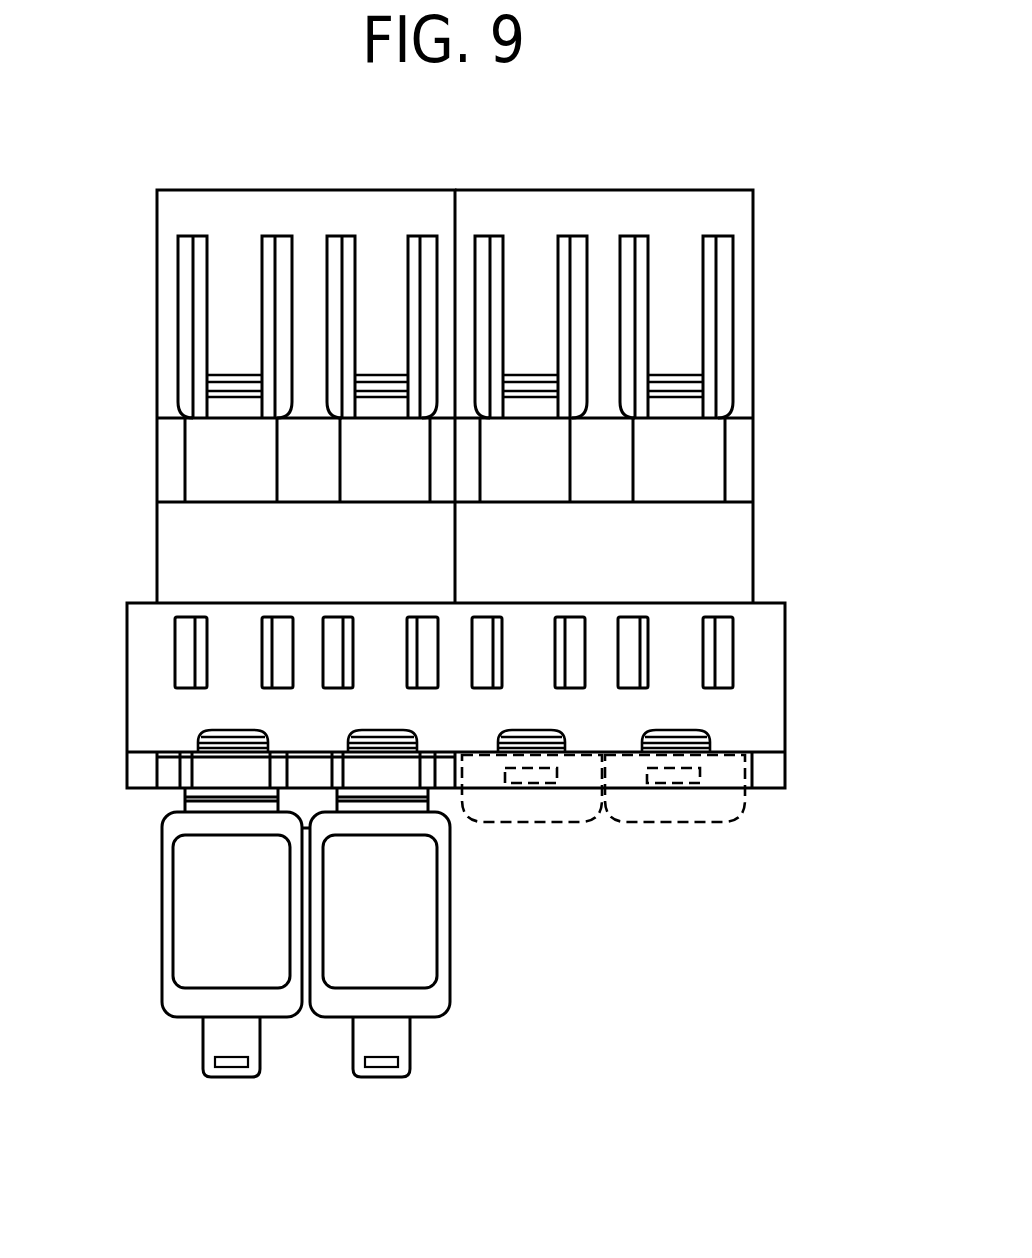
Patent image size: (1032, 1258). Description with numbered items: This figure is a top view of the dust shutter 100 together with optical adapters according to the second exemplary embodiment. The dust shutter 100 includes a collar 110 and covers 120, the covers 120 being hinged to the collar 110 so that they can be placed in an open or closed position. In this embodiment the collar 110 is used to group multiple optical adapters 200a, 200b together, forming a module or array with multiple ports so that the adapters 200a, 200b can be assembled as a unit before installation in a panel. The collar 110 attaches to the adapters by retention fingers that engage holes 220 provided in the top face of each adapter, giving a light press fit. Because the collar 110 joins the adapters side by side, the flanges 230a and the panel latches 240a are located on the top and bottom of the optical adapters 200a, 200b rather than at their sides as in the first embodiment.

The dust shutter 100 is at (483, 820).
The collar 110 is at (773, 695).
The cover 120 is at (423, 895).
The optical adapter 200a is at (732, 177).
The optical adapter 200b is at (145, 290).
The hole 220 is at (713, 627).
The flange 230a is at (712, 450).
The panel latch 240a is at (725, 305).